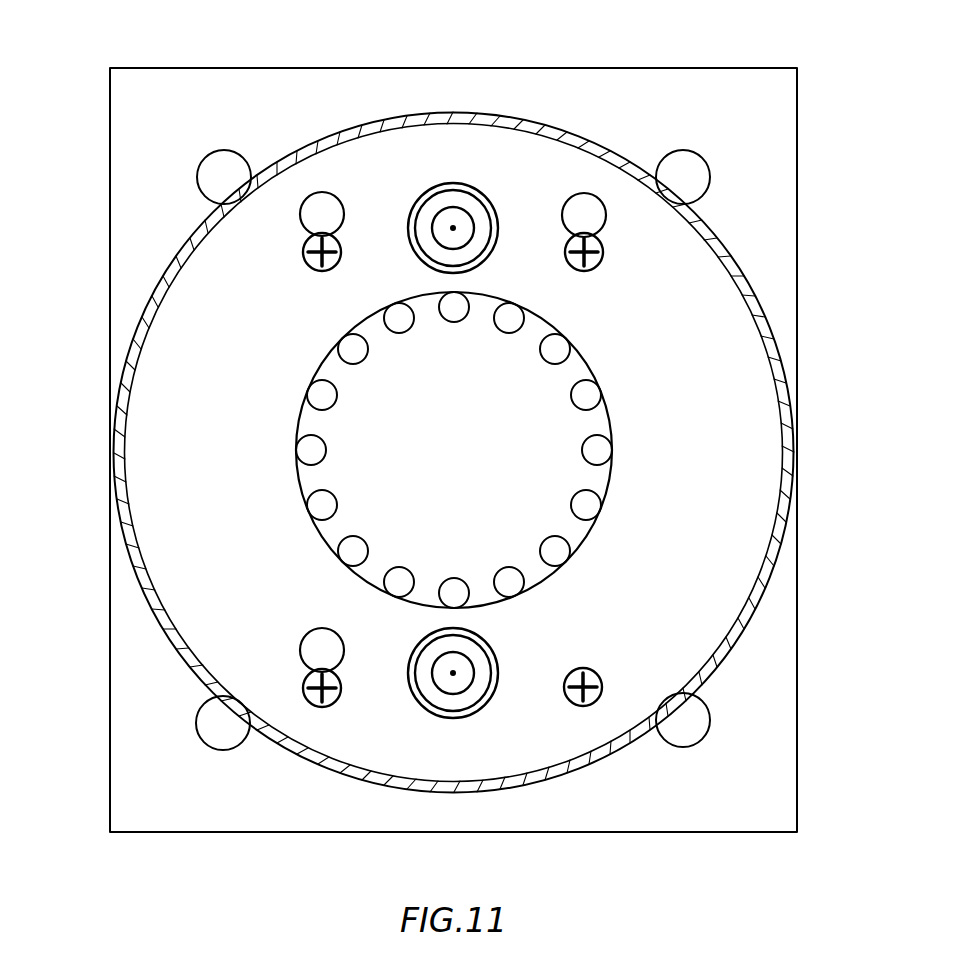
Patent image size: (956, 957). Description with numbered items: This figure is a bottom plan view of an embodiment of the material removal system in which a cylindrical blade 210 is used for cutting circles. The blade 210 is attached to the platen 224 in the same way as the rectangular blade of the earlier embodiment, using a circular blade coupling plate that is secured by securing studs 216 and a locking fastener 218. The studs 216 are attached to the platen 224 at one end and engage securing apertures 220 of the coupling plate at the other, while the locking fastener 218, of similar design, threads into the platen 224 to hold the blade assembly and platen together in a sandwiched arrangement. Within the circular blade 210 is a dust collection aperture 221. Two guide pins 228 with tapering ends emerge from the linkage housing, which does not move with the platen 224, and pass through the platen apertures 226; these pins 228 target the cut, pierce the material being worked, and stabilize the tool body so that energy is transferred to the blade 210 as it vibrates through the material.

The blade 210 is at (130, 372).
The securing studs 216 is at (600, 238).
The locking fastener 218 is at (593, 700).
The securing apertures 220 is at (568, 200).
The dust collection aperture 221 is at (607, 482).
The platen 224 is at (167, 815).
The platen apertures 226 is at (458, 208).
The guide pins 228 is at (410, 220).